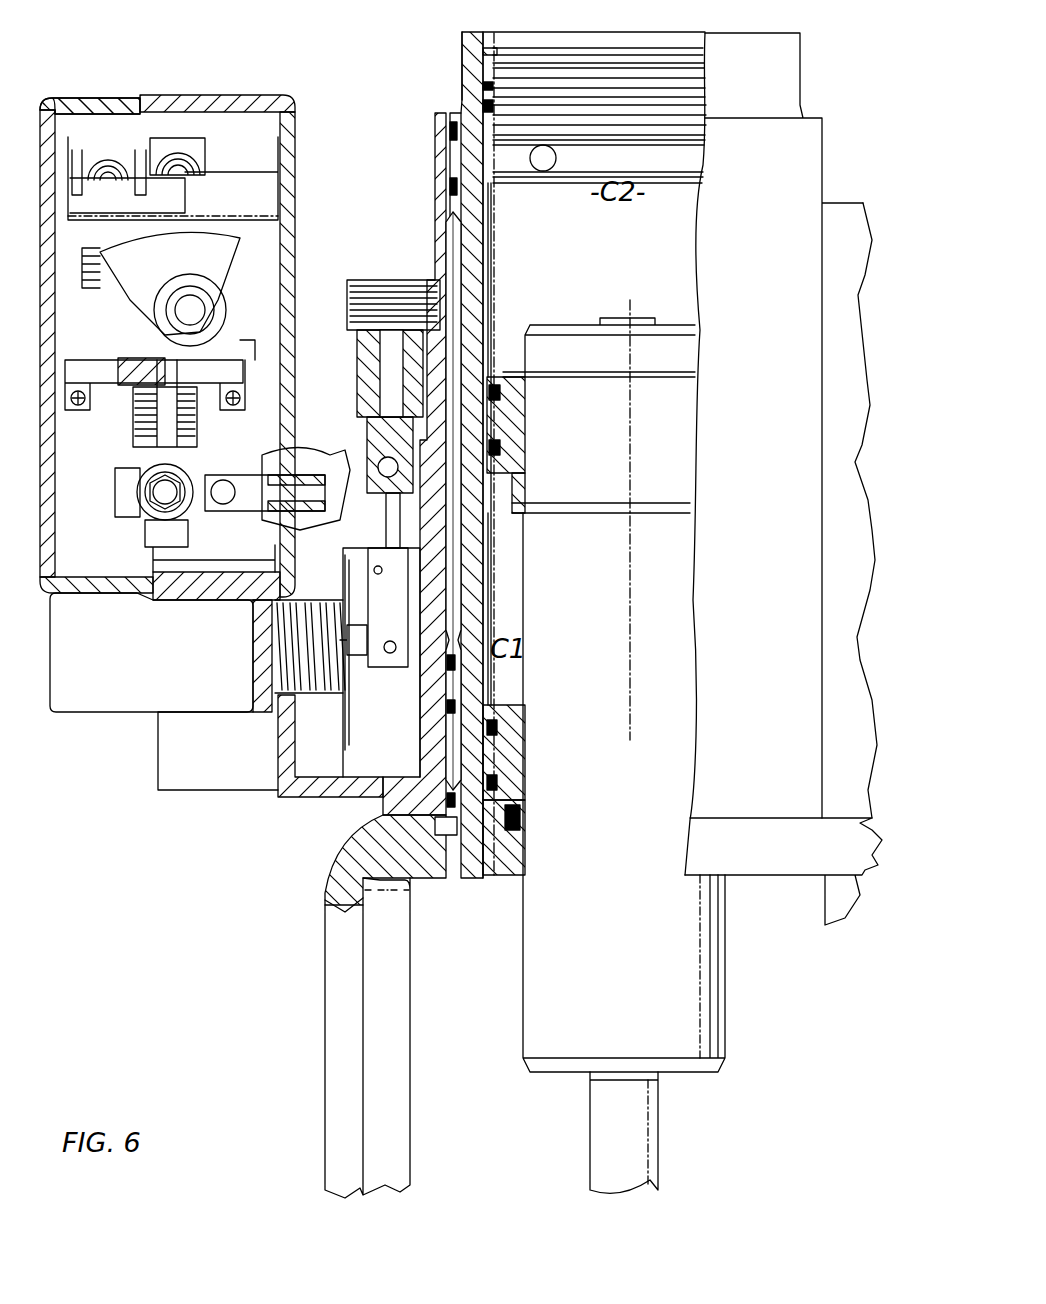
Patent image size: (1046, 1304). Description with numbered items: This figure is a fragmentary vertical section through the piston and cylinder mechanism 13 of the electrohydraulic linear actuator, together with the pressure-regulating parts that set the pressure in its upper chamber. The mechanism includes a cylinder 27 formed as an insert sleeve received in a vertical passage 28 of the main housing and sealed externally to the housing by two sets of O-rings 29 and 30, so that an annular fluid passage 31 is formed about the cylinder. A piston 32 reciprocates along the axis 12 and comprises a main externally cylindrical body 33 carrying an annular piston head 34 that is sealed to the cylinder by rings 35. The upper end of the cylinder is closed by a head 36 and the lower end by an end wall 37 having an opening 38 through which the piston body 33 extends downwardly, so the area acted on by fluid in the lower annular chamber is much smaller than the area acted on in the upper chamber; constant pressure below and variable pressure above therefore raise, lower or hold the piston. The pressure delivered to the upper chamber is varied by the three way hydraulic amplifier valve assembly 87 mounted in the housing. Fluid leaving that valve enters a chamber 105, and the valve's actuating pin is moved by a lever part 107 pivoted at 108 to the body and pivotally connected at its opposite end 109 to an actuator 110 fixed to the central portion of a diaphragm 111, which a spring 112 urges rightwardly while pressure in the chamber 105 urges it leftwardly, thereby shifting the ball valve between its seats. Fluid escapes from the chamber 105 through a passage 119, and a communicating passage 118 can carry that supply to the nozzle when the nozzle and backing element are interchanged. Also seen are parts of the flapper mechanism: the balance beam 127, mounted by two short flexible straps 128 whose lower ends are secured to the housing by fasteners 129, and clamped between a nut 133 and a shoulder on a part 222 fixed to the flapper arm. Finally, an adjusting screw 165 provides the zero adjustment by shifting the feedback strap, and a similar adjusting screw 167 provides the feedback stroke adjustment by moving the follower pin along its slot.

The axis 12 is at (630, 398).
The piston and cylinder mechanism 13 is at (446, 73).
The cylinder 27 is at (470, 246).
The vertical passage 28 is at (455, 208).
The O-rings 29 is at (448, 132).
The O-rings 30 is at (455, 705).
The annular fluid passage 31 is at (470, 308).
The piston 32 is at (578, 318).
The main externally cylindrical body 33 is at (525, 466).
The annular piston head 34 is at (500, 480).
The rings 35 is at (505, 376).
The head 36 is at (598, 80).
The end wall 37 is at (510, 706).
The opening 38 is at (522, 813).
The three way hydraulic amplifier valve assembly 87 is at (356, 430).
The chamber 105 is at (495, 598).
The lever part 107 is at (362, 660).
The pivot 108 is at (380, 574).
The opposite end 109 is at (399, 632).
The actuator 110 is at (347, 690).
The diaphragm 111 is at (360, 656).
The spring 112 is at (292, 647).
The communicating passage 118 is at (222, 480).
The passage 119 is at (330, 483).
The balance beam 127 is at (215, 353).
The flexible straps 128 is at (65, 370).
The fasteners 129 is at (300, 370).
The nut 133 is at (145, 348).
The adjusting screw 165 is at (120, 146).
The adjusting screw 167 is at (185, 141).
The part 222 is at (130, 368).